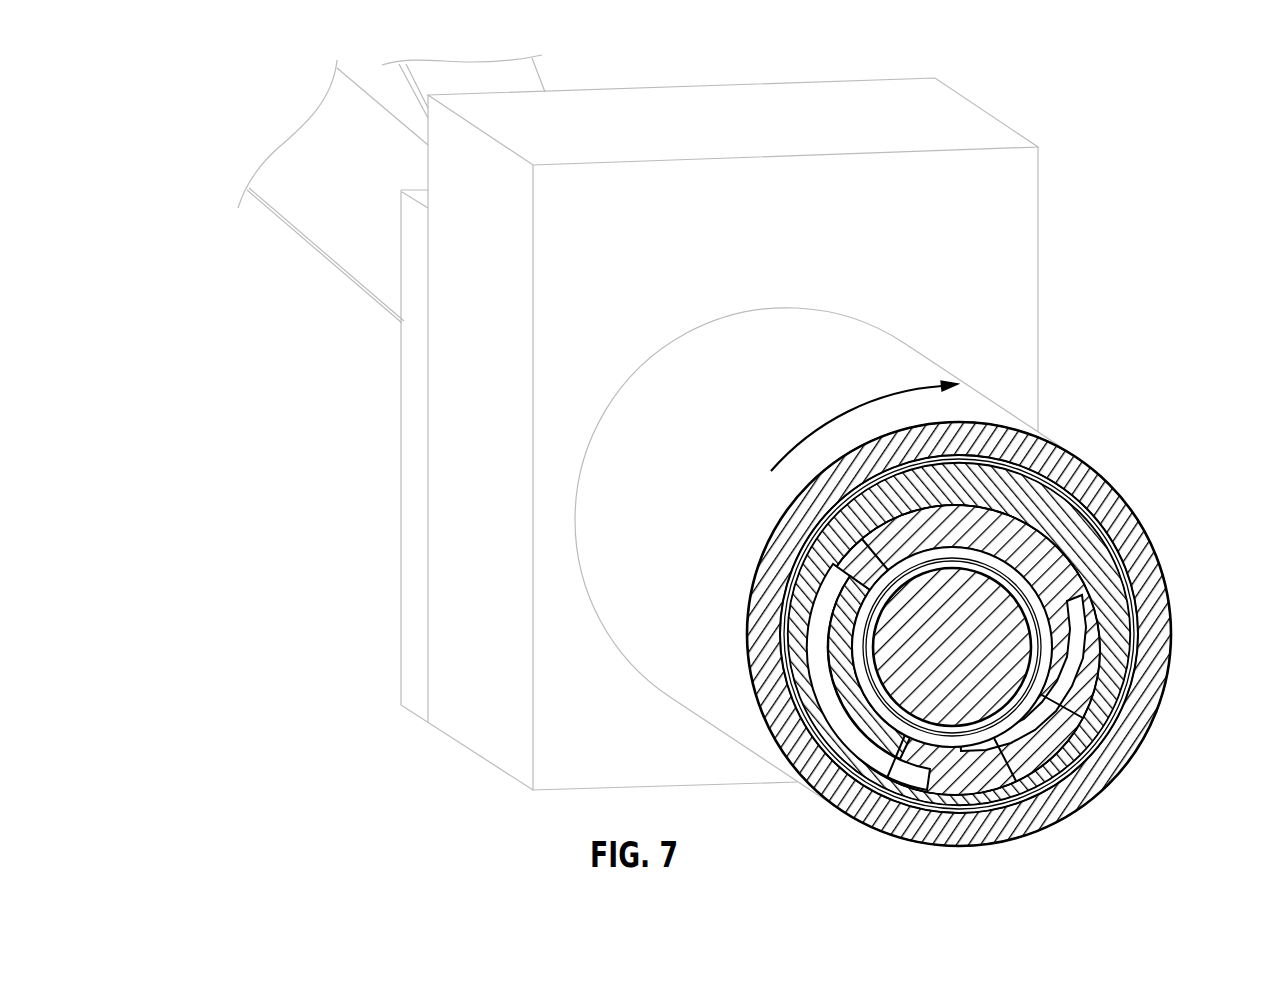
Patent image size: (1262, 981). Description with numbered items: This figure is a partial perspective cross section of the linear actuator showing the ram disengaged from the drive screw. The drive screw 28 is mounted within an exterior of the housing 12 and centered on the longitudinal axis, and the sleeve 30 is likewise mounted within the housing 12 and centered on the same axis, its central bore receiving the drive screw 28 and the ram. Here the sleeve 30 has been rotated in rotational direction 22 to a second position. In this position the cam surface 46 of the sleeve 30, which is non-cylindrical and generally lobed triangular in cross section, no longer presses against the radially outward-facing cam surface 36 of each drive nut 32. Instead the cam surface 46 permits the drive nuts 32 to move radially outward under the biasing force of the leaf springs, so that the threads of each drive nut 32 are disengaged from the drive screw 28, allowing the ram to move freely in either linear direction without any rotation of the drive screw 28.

The housing 12 is at (935, 358).
The rotational direction 22 is at (865, 400).
The drive screw 28 is at (978, 580).
The sleeve 30 is at (1057, 477).
The drive nut 32 is at (1080, 593).
The cam surface 36 is at (1133, 568).
The cam surface 46 is at (1110, 703).